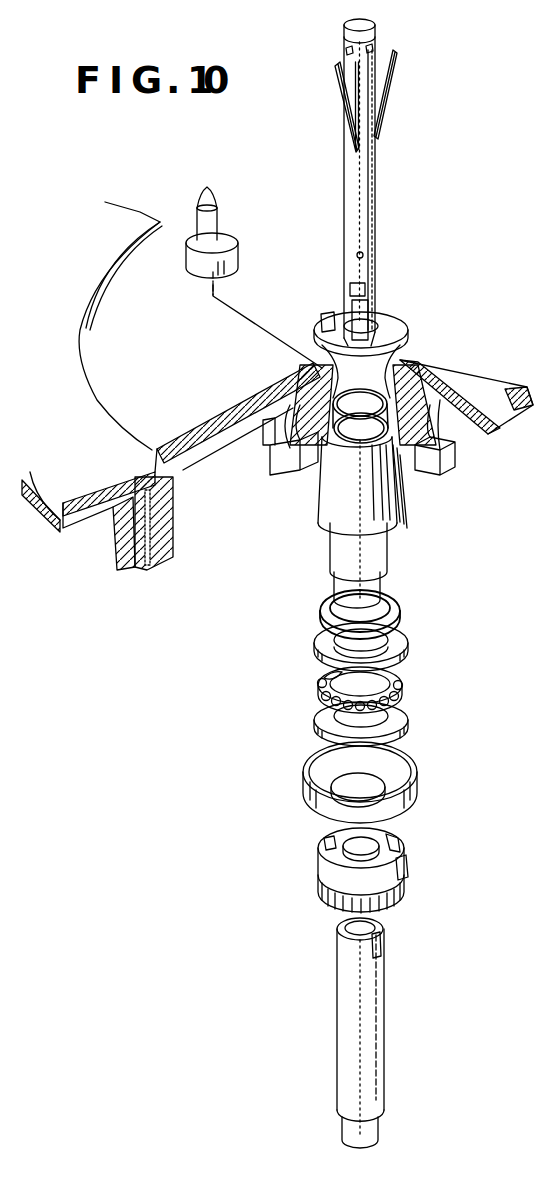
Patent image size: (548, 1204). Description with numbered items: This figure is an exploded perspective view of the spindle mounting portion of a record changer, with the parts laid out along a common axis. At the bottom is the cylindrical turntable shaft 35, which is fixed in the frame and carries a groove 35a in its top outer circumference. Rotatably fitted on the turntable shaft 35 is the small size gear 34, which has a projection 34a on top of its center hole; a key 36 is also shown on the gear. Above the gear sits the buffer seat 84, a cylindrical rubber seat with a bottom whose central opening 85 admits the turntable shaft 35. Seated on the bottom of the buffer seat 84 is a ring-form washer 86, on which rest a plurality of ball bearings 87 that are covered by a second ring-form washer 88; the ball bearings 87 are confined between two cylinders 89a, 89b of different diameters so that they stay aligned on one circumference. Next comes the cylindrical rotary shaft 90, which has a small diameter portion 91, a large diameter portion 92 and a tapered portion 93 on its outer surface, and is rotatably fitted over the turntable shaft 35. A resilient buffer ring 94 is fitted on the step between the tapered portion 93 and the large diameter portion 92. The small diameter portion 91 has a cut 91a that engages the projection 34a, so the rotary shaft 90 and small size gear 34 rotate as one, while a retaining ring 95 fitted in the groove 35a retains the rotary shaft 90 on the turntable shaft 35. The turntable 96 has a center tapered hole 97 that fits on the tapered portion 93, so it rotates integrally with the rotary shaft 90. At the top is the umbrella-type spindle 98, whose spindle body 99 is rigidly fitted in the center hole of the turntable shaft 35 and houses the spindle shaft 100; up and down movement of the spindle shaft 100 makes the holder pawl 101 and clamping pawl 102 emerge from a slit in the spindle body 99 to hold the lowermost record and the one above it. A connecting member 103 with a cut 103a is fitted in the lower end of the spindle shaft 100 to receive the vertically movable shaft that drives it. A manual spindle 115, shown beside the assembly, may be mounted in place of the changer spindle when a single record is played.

The spindle 98 is at (389, 177).
The clamping pawl 102 is at (372, 52).
The holder pawl 101 is at (383, 82).
The spindle body 99 is at (366, 235).
The spindle shaft 100 is at (370, 298).
The connecting member 103 is at (367, 340).
The cut 103a is at (326, 326).
The center tapered hole 97 is at (306, 357).
The turntable 96 is at (435, 392).
The retaining ring 95 is at (362, 398).
The cylindrical rotary shaft 90 is at (366, 522).
The tapered portion 93 is at (396, 502).
The large diameter portion 92 is at (393, 548).
The small diameter portion 91 is at (388, 584).
The cut 91a is at (392, 614).
The buffer ring 94 is at (400, 622).
The washer 88 is at (374, 678).
The ball bearings 87 is at (330, 680).
The cylinder 89b is at (396, 692).
The cylinder 89a is at (332, 706).
The washer 86 is at (357, 721).
The buffer seat 84 is at (376, 783).
The cup bore 85 is at (385, 790).
The small size gear 34 is at (365, 870).
The projection 34a is at (330, 850).
The gear key 36 is at (404, 878).
The turntable shaft 35 is at (350, 1033).
The groove 35a is at (344, 950).
The manual spindle 115 is at (226, 222).